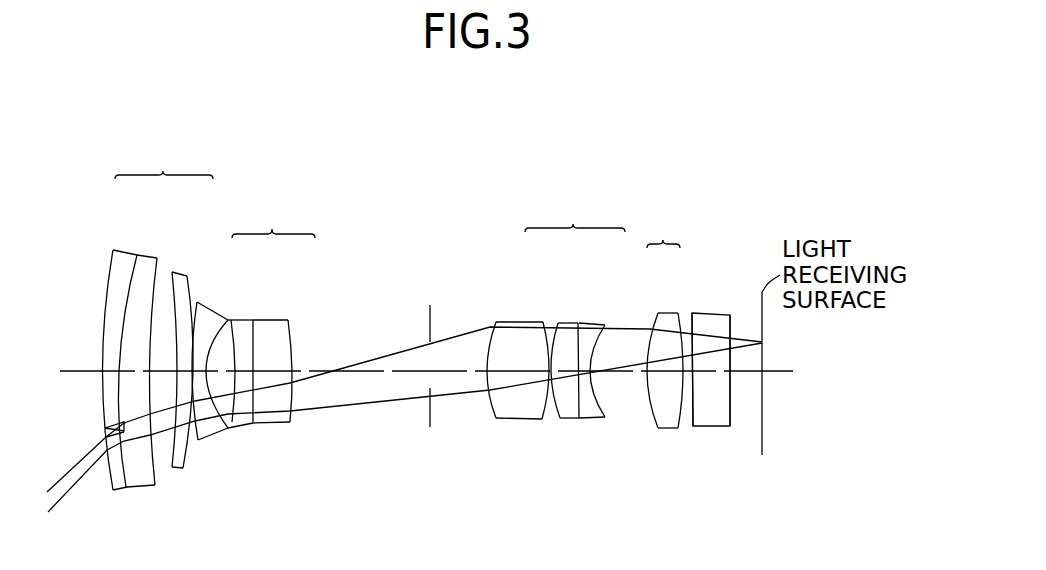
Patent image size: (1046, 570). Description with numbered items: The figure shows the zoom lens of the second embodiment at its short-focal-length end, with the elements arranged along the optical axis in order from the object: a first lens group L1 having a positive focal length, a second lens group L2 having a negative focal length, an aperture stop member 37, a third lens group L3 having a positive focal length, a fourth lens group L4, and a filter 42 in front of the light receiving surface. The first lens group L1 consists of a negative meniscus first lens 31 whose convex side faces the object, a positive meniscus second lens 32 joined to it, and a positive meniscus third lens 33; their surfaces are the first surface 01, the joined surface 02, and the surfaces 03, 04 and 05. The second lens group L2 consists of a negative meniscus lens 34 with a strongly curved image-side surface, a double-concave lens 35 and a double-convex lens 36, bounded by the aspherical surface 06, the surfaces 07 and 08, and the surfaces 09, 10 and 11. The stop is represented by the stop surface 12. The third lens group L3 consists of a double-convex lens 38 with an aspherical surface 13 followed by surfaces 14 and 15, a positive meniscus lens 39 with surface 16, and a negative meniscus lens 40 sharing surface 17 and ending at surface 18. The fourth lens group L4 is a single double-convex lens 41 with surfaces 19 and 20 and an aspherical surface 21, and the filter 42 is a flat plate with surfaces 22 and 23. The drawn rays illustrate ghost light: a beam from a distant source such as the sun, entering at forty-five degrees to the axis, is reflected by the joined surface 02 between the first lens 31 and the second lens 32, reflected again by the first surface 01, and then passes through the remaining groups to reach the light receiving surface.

The first surface 01 is at (112, 489).
The joined surface 02 is at (126, 468).
The lens surface 03 is at (155, 485).
The lens surface 04 is at (175, 467).
The lens surface 05 is at (187, 442).
The aspherical surface 06 is at (197, 300).
The lens surface 07 is at (198, 440).
The lens surface 08 is at (228, 320).
The lens surface 09 is at (221, 357).
The lens surface 10 is at (254, 353).
The lens surface 11 is at (293, 328).
The stop surface 12 is at (430, 414).
The aspherical surface 13 is at (488, 330).
The lens surface 14 is at (488, 410).
The lens surface 15 is at (541, 417).
The lens surface 16 is at (561, 413).
The lens surface 17 is at (578, 416).
The lens surface 18 is at (597, 391).
The lens surface 19 is at (650, 428).
The lens surface 20 is at (678, 428).
The aspherical surface 21 is at (690, 312).
The filter surface 22 is at (695, 426).
The filter surface 23 is at (730, 426).
The 1-1 lens 31 is at (107, 364).
The 1-2 lens 32 is at (160, 356).
The 1-3 lens 33 is at (221, 339).
The 2-1 lens 34 is at (232, 315).
The 2-2 lens 35 is at (245, 336).
The 2-3 lens 36 is at (297, 333).
The aperture stop member 37 is at (418, 347).
The 3-1 lens 38 is at (502, 349).
The 3-2 lens 39 is at (550, 363).
The 3-3 lens 40 is at (611, 350).
The 4-1 lens 41 is at (650, 377).
The filter 42 is at (725, 359).
The first lens group L1 is at (172, 343).
The second lens group L2 is at (267, 315).
The third lens group L3 is at (549, 346).
The fourth lens group L4 is at (689, 359).